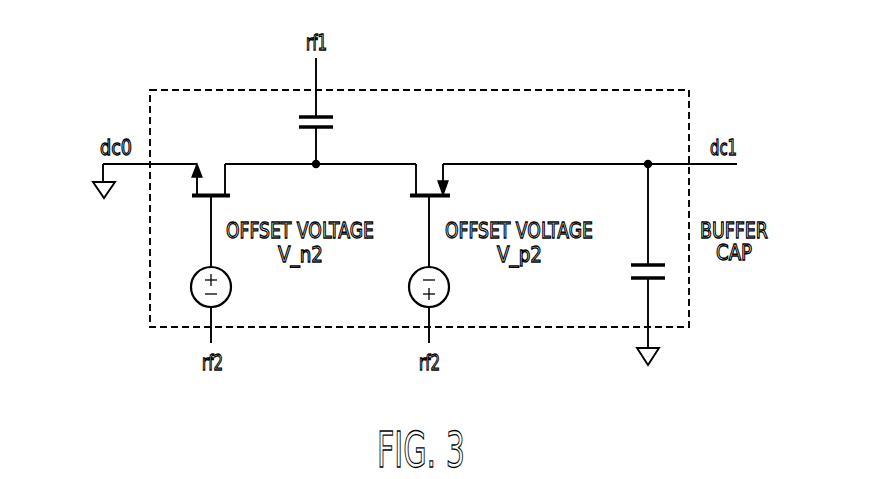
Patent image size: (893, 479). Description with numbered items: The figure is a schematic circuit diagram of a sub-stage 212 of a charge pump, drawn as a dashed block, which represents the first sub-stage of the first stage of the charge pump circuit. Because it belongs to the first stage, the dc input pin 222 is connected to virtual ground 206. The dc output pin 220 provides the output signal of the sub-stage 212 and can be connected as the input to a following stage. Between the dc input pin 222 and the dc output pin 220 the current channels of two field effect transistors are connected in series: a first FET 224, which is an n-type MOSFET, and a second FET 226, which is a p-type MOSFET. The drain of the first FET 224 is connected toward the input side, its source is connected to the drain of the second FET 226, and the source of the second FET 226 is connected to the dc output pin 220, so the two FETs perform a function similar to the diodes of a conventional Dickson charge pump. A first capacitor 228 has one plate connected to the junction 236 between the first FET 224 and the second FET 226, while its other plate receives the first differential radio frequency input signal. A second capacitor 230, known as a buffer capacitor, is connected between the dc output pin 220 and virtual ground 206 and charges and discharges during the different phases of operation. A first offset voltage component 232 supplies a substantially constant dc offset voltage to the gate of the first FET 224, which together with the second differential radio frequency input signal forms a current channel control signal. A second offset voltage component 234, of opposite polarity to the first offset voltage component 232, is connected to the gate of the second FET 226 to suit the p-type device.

The virtual ground 206 is at (98, 180).
The first sub-stage 212 is at (582, 88).
The dc output pin 220 is at (695, 160).
The dc input pin 222 is at (142, 174).
The first FET 224 is at (196, 185).
The second FET 226 is at (417, 174).
The first capacitor 228 is at (323, 114).
The second capacitor 230 is at (640, 282).
The first offset voltage component 232 is at (231, 295).
The second offset voltage component 234 is at (449, 300).
The junction 236 is at (304, 150).